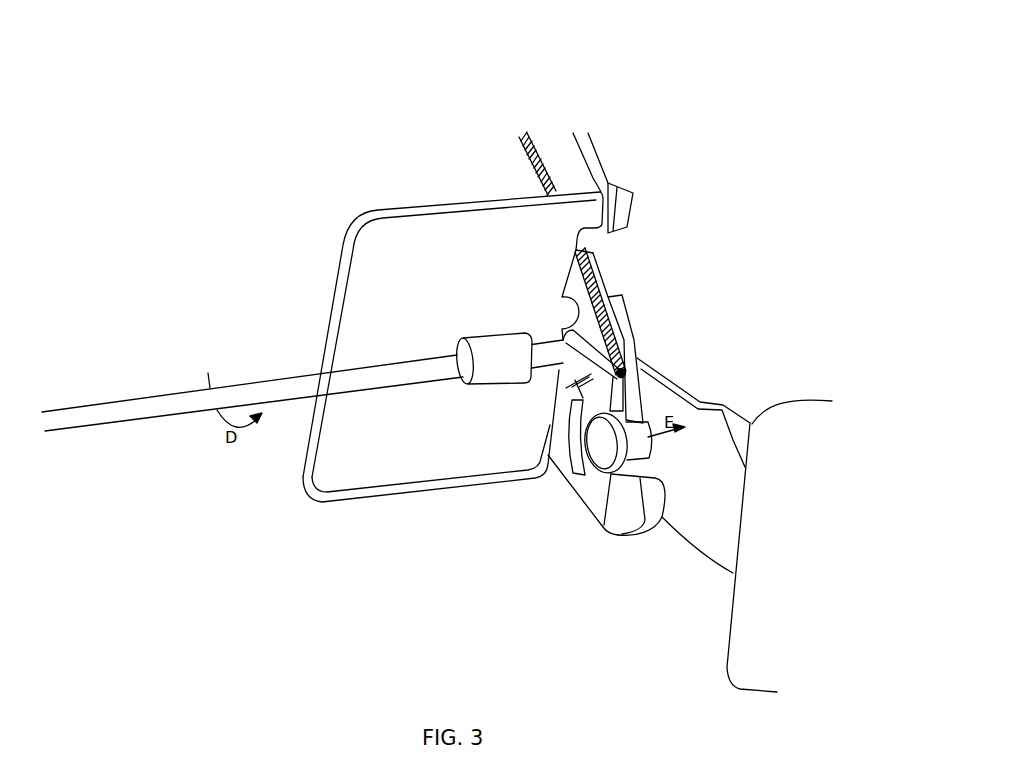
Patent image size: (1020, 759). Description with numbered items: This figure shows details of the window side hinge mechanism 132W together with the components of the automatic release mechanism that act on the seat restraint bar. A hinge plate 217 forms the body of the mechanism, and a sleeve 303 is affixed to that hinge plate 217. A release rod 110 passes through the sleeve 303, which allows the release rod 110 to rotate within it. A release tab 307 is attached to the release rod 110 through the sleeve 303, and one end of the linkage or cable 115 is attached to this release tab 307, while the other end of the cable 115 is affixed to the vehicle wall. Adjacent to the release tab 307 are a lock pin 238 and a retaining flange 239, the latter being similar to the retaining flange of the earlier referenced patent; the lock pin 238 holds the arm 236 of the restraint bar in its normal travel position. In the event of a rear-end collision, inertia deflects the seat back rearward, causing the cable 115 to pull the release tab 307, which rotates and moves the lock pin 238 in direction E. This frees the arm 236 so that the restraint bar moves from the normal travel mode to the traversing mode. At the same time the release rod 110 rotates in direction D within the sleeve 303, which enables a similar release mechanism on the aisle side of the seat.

The hinge plate 217 is at (413, 257).
The linkage (cable) 115 is at (591, 292).
The window side hinge mechanism 132W is at (704, 269).
The arm 236 is at (700, 420).
The sleeve 303 is at (503, 362).
The release tab 307 is at (560, 427).
The release rod 110 is at (163, 403).
The lock pin 238 is at (637, 448).
The retaining flange 239 is at (602, 445).